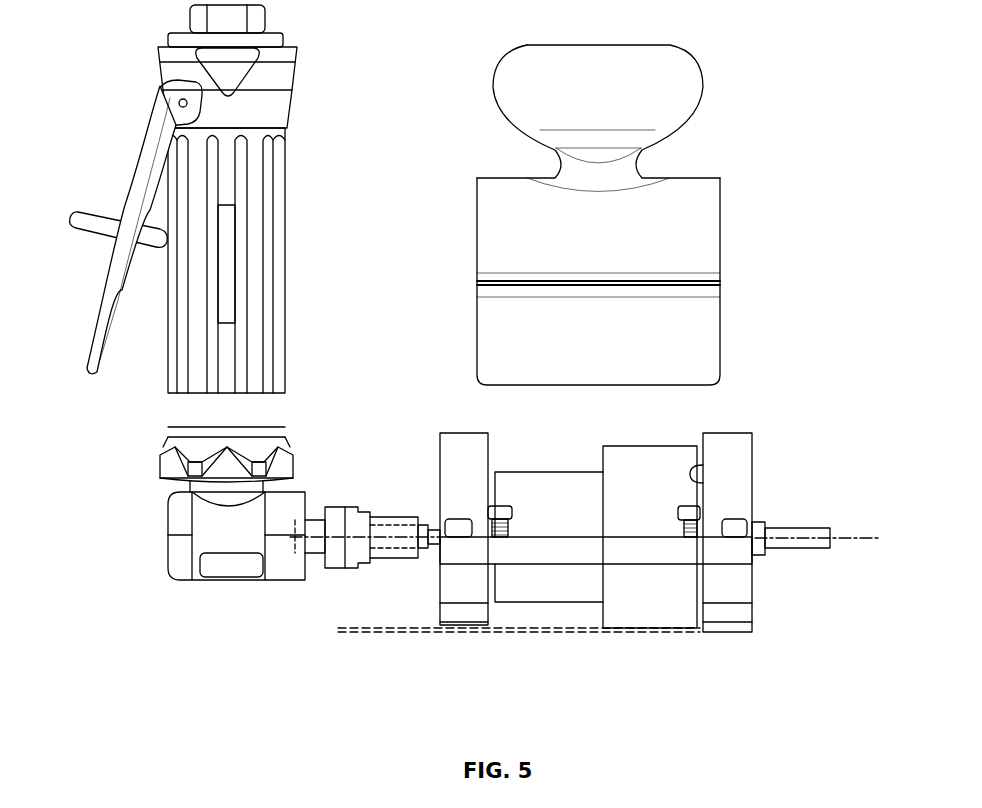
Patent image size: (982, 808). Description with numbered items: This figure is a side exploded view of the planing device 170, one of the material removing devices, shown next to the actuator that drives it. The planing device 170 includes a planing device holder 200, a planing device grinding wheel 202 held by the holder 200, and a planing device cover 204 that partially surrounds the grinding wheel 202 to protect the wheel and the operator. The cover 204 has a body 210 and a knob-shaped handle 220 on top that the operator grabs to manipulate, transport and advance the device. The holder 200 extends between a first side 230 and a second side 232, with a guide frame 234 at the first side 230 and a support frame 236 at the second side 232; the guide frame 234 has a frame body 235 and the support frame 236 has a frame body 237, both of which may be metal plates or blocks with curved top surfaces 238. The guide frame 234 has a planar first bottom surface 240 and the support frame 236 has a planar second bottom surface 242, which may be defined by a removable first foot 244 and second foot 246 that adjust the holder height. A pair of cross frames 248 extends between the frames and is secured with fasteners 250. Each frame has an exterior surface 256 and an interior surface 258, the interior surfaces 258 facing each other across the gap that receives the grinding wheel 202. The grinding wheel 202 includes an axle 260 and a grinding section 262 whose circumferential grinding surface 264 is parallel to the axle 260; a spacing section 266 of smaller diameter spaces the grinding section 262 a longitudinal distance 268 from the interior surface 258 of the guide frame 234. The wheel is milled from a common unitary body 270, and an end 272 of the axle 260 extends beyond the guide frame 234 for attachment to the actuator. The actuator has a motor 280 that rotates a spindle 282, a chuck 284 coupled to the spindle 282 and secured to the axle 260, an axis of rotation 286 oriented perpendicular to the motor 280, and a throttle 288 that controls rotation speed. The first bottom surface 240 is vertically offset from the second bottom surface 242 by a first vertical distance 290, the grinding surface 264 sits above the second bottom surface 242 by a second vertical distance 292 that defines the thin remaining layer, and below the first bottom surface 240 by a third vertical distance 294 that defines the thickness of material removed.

The planing device 170 is at (780, 60).
The planing device holder 200 is at (637, 221).
The planing device grinding wheel 202 is at (660, 458).
The planing device cover 204 is at (707, 333).
The body 210 is at (697, 252).
The handle 220 is at (614, 57).
The first side 230 is at (563, 528).
The second side 232 is at (779, 550).
The guide frame 234 is at (447, 462).
The frame body 235 is at (478, 447).
The support frame 236 is at (750, 448).
The frame body 237 is at (735, 585).
The curved top surfaces 238 is at (468, 432).
The first bottom surface 240 is at (460, 632).
The second bottom surface 242 is at (730, 633).
The first foot 244 is at (448, 611).
The second foot 246 is at (745, 615).
The cross frames 248 is at (733, 555).
The fasteners 250 is at (765, 523).
The exterior surface 256 is at (438, 488).
The interior surface 258 is at (490, 440).
The axle 260 is at (812, 548).
The grinding section 262 is at (697, 700).
The grinding surface 264 is at (647, 602).
The spacing section 266 is at (603, 700).
The longitudinal distance 268 is at (601, 583).
The unitary body 270 is at (618, 472).
The end of the axle 272 is at (392, 520).
The motor 280 is at (258, 322).
The spindle 282 is at (232, 568).
The chuck 284 is at (347, 560).
The axis of rotation 286 is at (344, 532).
The throttle 288 is at (116, 250).
The first vertical distance 290 is at (360, 600).
The second vertical distance 292 is at (687, 605).
The third vertical distance 294 is at (556, 560).